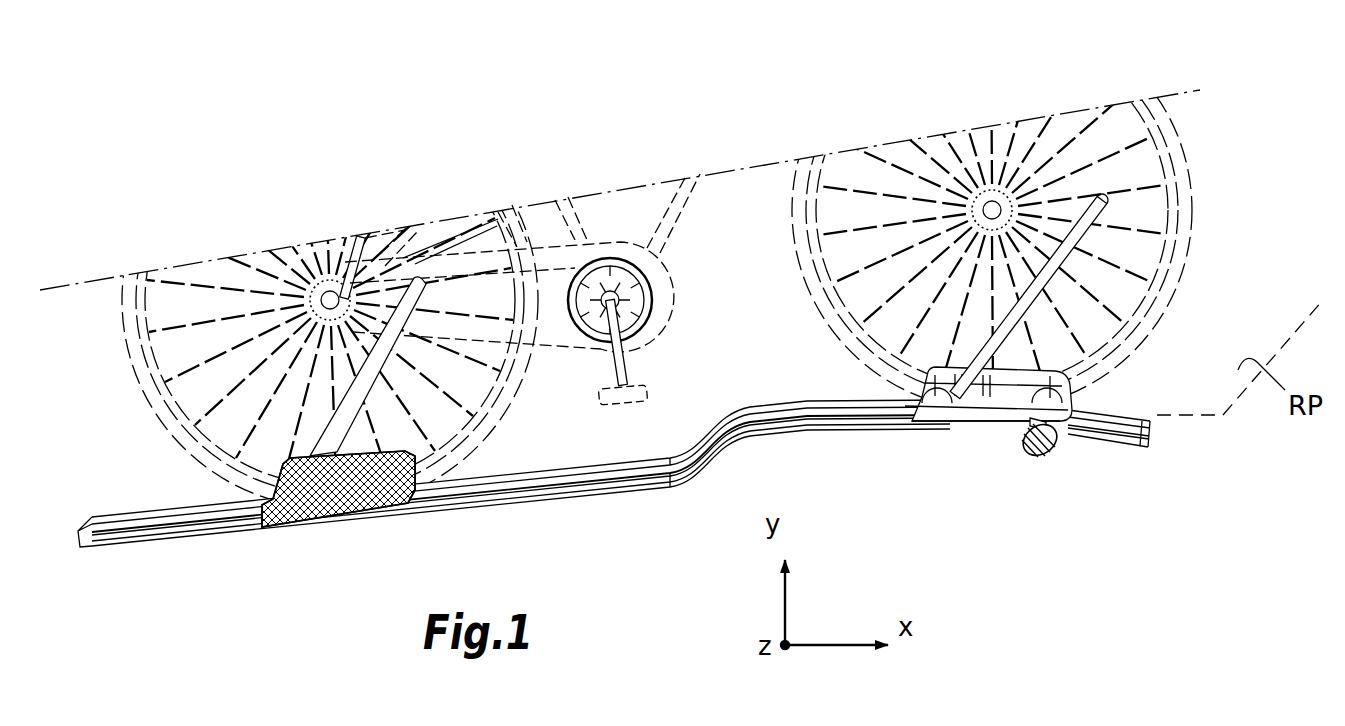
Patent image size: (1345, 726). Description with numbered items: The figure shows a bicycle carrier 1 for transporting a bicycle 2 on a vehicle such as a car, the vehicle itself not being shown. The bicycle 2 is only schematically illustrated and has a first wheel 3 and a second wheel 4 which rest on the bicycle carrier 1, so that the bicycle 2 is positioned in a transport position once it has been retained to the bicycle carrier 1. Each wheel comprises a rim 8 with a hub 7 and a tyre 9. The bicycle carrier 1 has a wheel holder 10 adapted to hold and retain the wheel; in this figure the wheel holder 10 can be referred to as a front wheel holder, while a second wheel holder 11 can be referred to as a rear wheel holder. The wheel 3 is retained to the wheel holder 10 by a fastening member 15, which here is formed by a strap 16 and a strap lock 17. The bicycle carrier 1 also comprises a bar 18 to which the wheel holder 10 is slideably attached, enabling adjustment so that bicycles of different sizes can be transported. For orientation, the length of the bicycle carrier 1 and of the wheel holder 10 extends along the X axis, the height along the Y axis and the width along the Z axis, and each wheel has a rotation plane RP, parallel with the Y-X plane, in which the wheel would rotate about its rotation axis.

The bicycle carrier 1 is at (653, 414).
The bicycle 2 is at (668, 228).
The first wheel 3 is at (1032, 210).
The second wheel 4 is at (514, 434).
The hub 7 is at (988, 197).
The rim 8 is at (1170, 150).
The tyre 9 is at (1185, 207).
The wheel holder 10 is at (966, 446).
The second wheel holder 11 is at (324, 539).
The fastening member 15 is at (1083, 297).
The strap 16 is at (1068, 287).
The strap lock 17 is at (1033, 455).
The bar 18 is at (626, 487).